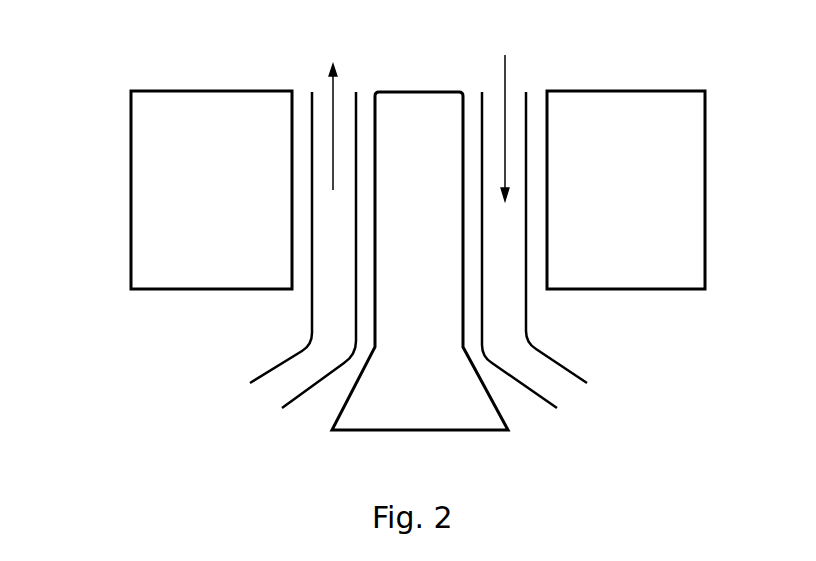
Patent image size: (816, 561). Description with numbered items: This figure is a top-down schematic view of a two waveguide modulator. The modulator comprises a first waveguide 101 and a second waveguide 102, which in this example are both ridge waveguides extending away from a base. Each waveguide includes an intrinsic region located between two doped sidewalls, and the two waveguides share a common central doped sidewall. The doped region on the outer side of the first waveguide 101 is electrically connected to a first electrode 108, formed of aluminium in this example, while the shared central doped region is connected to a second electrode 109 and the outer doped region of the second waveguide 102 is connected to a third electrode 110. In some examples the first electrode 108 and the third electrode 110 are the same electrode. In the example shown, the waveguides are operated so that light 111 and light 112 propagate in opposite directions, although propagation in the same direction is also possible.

The first waveguide 101 is at (325, 278).
The second waveguide 102 is at (498, 318).
The first electrode 108 is at (160, 140).
The second electrode 109 is at (422, 120).
The third electrode 110 is at (630, 118).
The light 111 is at (332, 88).
The light 112 is at (503, 103).